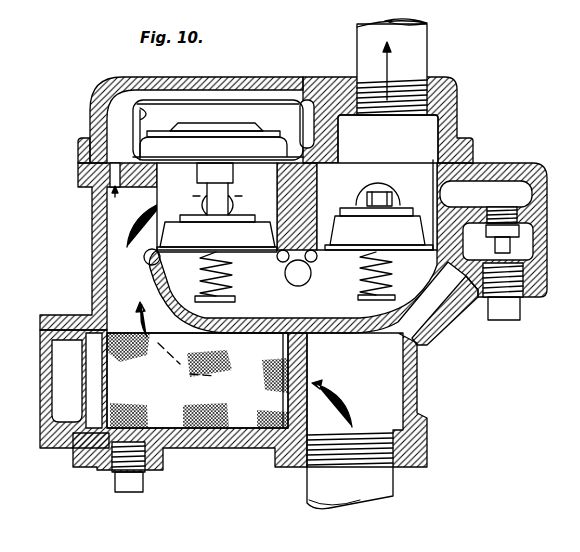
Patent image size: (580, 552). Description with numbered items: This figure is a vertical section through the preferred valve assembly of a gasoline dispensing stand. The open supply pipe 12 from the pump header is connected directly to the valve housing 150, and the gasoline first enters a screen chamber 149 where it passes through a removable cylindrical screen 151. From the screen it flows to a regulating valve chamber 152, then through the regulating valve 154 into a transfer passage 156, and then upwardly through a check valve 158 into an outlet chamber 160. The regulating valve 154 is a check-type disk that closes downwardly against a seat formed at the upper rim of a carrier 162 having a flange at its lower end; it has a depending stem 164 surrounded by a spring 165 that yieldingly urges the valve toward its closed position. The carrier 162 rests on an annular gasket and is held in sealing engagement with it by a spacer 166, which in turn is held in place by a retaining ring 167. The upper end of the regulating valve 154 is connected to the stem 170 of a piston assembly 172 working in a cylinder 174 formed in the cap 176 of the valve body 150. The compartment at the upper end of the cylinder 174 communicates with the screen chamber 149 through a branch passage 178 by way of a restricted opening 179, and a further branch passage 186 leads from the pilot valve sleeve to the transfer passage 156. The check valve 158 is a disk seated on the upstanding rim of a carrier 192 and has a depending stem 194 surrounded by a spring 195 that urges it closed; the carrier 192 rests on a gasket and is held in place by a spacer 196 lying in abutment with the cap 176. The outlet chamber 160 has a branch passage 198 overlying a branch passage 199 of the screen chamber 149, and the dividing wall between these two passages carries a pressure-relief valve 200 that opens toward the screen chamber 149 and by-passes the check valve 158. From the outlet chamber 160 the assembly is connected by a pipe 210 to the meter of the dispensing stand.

The supply pipe 12 is at (387, 485).
The screen chamber 149 is at (247, 355).
The valve housing 150 is at (420, 391).
The removable cylindrical screen 151 is at (220, 373).
The regulating valve chamber 152 is at (250, 177).
The regulating valve 154 is at (157, 246).
The transfer passage 156 is at (300, 287).
The check valve 158 is at (330, 217).
The outlet chamber 160 is at (388, 139).
The carrier 162 is at (150, 256).
The stem 164 is at (240, 302).
The spring 165 is at (228, 283).
The spacer 166 is at (197, 235).
The retaining ring 167 is at (111, 183).
The stem 170 is at (217, 189).
The piston assembly 172 is at (197, 137).
The cylinder 174 is at (140, 111).
The cap 176 is at (125, 77).
The branch passage 178 is at (113, 125).
The restricted opening 179 is at (153, 198).
The branch passage 186 is at (285, 331).
The carrier 192 is at (363, 233).
The stem 194 is at (377, 300).
The spring 195 is at (390, 278).
The spacer 196 is at (440, 195).
The branch passage 198 is at (520, 188).
The branch passage 199 is at (525, 257).
The pressure-relief valve 200 is at (510, 240).
The pipe 210 is at (427, 60).